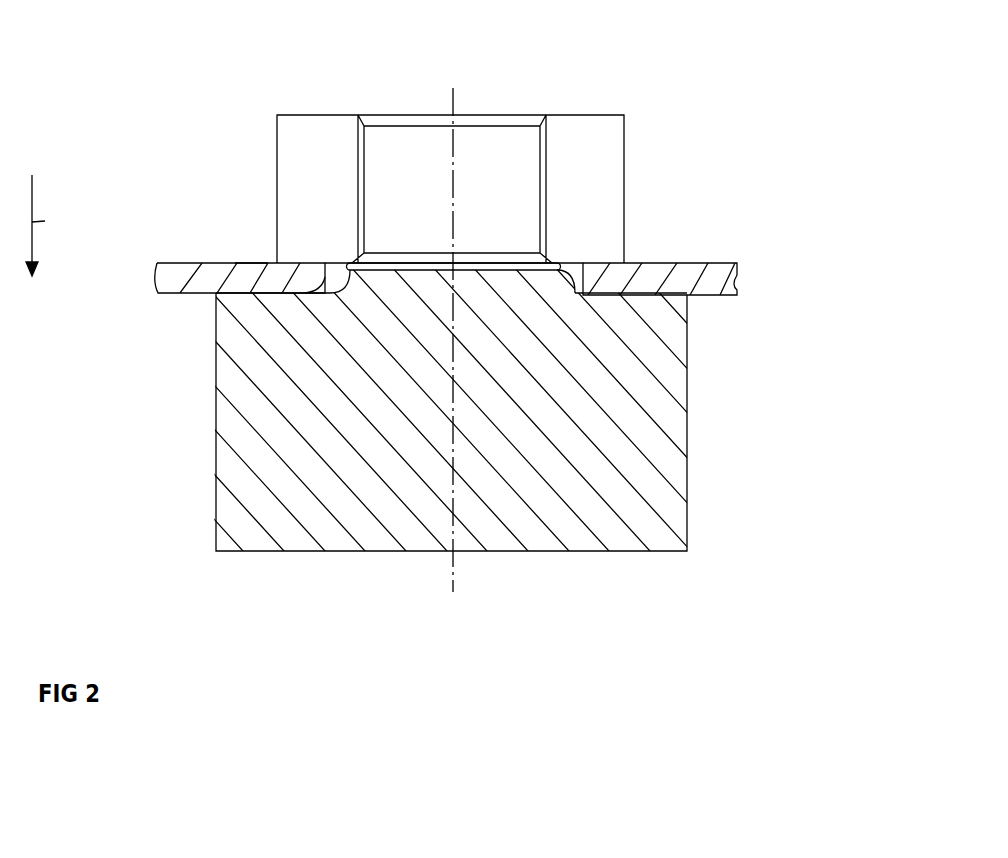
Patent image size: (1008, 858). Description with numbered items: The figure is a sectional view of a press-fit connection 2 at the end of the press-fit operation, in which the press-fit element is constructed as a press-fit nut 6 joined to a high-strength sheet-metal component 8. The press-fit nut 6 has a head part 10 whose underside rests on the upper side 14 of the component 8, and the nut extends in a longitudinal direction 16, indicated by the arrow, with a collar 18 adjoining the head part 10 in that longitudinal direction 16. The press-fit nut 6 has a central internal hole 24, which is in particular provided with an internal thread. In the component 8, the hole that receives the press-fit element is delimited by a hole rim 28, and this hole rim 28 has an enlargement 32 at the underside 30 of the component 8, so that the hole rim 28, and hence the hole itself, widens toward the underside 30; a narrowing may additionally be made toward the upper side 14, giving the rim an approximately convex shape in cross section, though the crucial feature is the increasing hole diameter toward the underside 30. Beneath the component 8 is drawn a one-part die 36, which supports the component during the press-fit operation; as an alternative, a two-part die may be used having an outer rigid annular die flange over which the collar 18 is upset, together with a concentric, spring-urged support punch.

The press-fit connection 2 is at (828, 103).
The press-fit nut 6 is at (600, 188).
The high-strength sheet-metal component 8 is at (173, 275).
The head part 10 is at (580, 135).
The upper side 14 is at (250, 257).
The longitudinal direction 16 is at (60, 225).
The collar 18 is at (337, 293).
The central internal hole 24 is at (392, 153).
The hole rim 28 is at (573, 264).
The underside 30 is at (742, 297).
The enlargement 32 is at (577, 300).
The die 36 is at (655, 498).